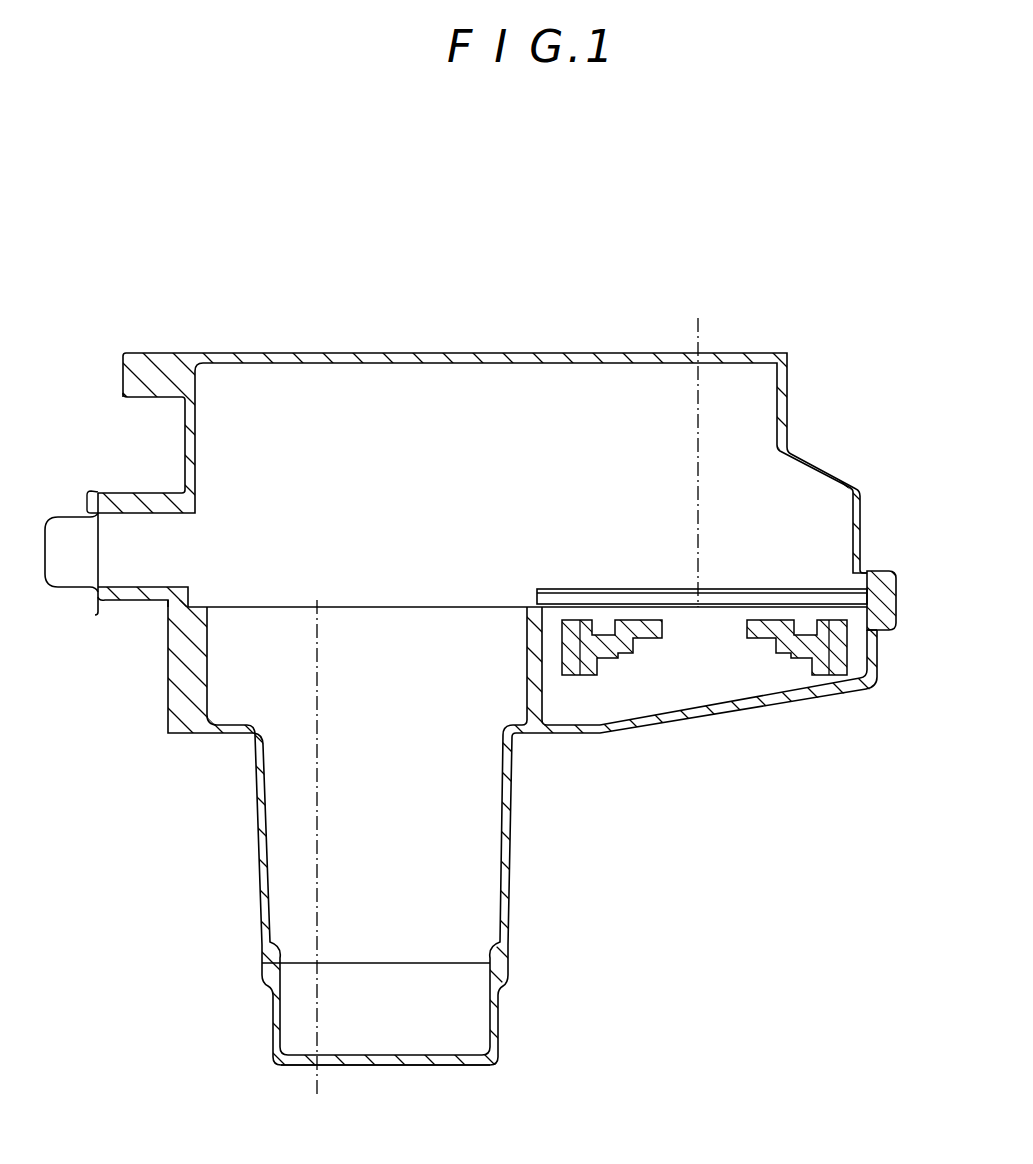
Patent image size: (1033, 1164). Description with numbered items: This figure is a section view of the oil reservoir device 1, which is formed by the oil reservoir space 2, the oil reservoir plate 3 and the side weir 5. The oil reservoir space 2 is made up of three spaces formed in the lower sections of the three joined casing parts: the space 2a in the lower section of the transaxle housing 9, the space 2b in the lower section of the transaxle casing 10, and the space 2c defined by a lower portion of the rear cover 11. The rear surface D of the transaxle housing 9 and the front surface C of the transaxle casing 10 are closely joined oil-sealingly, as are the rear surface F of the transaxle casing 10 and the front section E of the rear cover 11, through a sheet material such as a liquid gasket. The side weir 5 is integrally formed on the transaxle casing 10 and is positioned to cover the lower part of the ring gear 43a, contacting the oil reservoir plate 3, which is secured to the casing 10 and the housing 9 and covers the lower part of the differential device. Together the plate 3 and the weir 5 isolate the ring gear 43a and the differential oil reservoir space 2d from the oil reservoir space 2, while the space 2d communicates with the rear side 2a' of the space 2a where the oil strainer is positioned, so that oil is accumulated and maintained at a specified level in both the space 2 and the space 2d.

The oil reservoir device 1 is at (518, 345).
The oil reservoir space 2 is at (131, 708).
The space 2a is at (456, 484).
The rear side of the section 2a 2a' is at (871, 483).
The space 2b is at (260, 685).
The space 2c is at (288, 1013).
The differential oil reservoir space 2d is at (688, 690).
The oil reservoir plate 3 is at (783, 588).
The side weir 5 is at (545, 698).
The transaxle housing 9 is at (818, 467).
The transaxle casing 10 is at (508, 866).
The rear cover 11 is at (470, 1066).
The ring gear 43a is at (838, 660).
The front surface of the transaxle casing C is at (885, 628).
The rear surface of the transaxle housing D is at (887, 573).
The front section of the rear cover E is at (497, 975).
The rear surface of the transaxle casing F is at (503, 948).